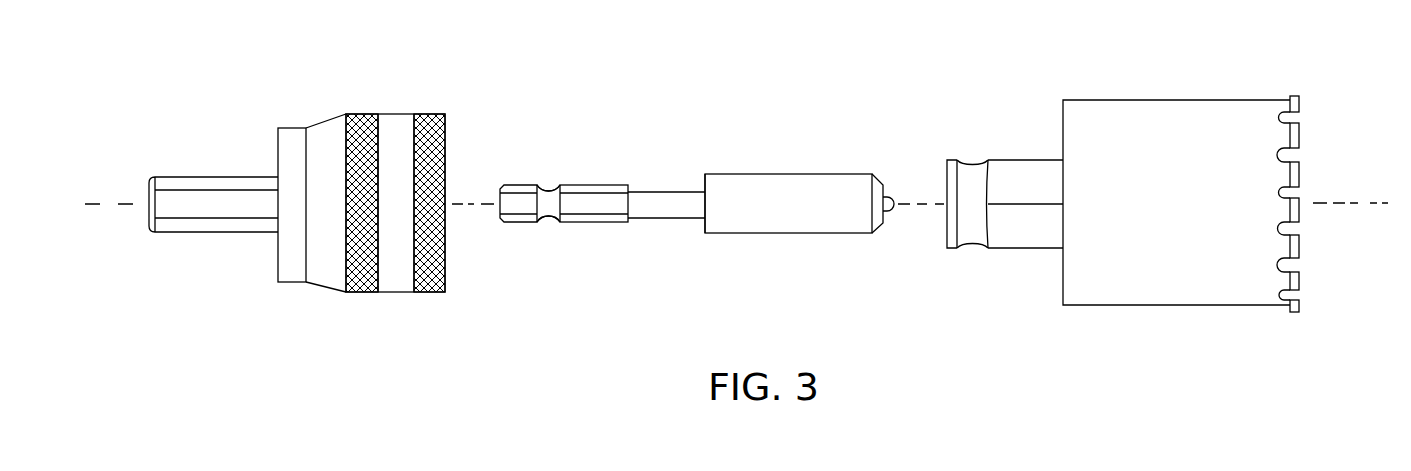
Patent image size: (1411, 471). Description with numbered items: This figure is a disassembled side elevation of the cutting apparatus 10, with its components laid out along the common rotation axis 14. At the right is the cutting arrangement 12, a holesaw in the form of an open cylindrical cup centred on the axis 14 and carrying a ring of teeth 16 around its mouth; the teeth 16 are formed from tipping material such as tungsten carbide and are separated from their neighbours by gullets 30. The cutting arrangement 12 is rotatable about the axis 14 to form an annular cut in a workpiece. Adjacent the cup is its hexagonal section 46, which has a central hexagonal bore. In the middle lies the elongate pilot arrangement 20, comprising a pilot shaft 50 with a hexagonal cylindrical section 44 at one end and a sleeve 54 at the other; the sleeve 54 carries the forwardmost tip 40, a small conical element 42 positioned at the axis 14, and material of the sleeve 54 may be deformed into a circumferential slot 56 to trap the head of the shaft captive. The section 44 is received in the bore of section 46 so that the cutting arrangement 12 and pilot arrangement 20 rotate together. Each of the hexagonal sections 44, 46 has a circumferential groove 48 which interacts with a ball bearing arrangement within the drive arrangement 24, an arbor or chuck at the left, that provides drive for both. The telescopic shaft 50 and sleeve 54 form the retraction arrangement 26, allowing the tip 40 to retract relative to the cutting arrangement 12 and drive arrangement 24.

The cutting apparatus 10 is at (503, 67).
The cutting arrangement 12 is at (1209, 182).
The rotation axis 14 is at (101, 205).
The teeth 16 is at (1300, 280).
The pilot arrangement 20 is at (796, 172).
The drive arrangement 24 is at (396, 283).
The retraction arrangement 26 is at (602, 223).
The gullets 30 is at (1277, 266).
The tip 40 is at (859, 156).
The conical element 42 is at (887, 198).
The hexagonal cylindrical section 44 is at (530, 222).
The hexagonal section 46 is at (1030, 249).
The circumferential groove 48 is at (548, 188).
The pilot shaft 50 is at (655, 200).
The sleeve 54 is at (812, 222).
The circumferential slot 56 is at (694, 190).